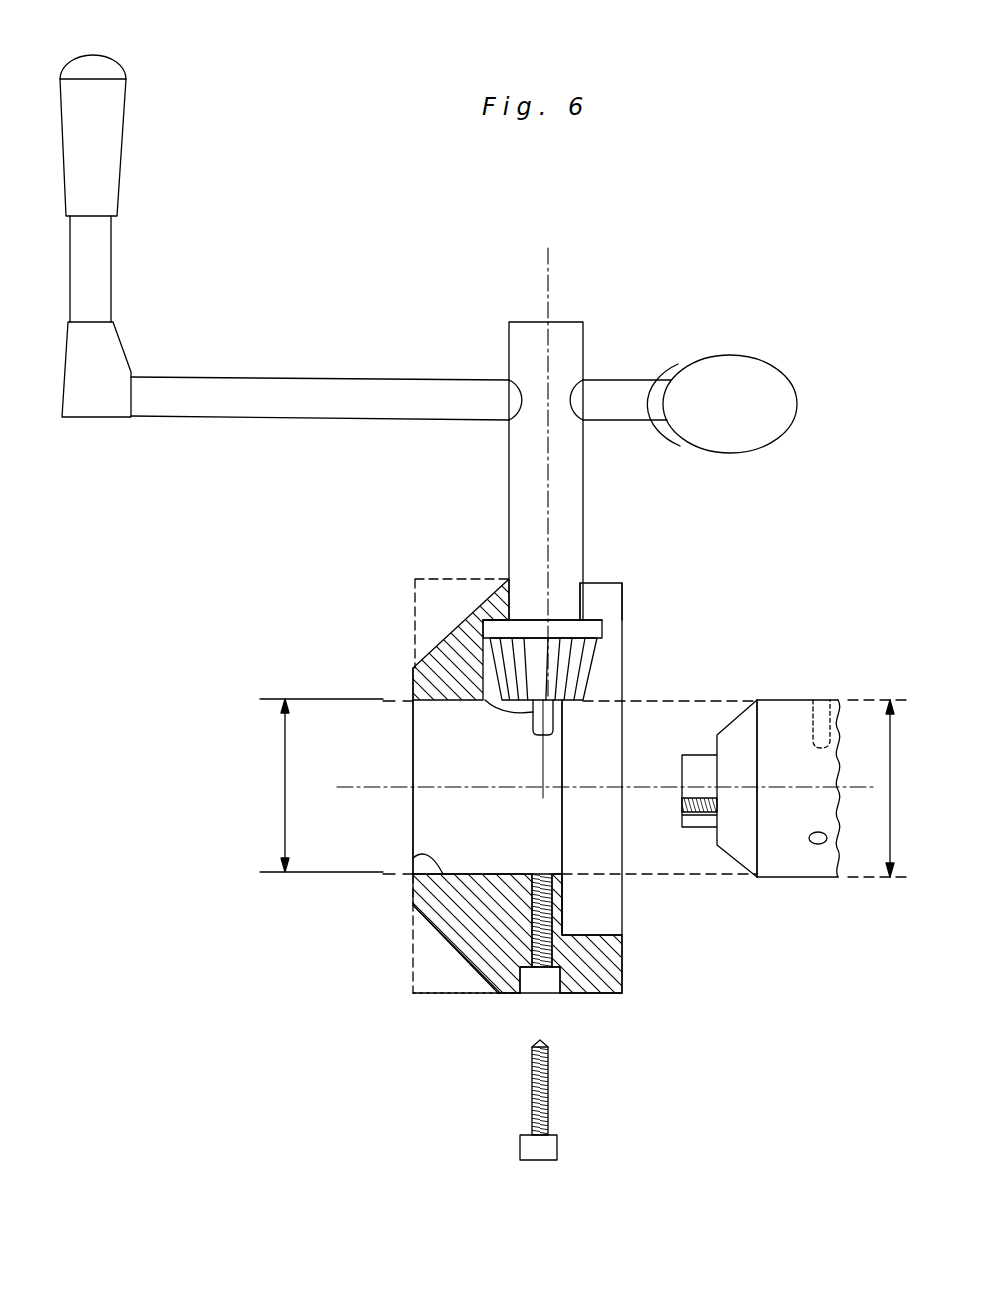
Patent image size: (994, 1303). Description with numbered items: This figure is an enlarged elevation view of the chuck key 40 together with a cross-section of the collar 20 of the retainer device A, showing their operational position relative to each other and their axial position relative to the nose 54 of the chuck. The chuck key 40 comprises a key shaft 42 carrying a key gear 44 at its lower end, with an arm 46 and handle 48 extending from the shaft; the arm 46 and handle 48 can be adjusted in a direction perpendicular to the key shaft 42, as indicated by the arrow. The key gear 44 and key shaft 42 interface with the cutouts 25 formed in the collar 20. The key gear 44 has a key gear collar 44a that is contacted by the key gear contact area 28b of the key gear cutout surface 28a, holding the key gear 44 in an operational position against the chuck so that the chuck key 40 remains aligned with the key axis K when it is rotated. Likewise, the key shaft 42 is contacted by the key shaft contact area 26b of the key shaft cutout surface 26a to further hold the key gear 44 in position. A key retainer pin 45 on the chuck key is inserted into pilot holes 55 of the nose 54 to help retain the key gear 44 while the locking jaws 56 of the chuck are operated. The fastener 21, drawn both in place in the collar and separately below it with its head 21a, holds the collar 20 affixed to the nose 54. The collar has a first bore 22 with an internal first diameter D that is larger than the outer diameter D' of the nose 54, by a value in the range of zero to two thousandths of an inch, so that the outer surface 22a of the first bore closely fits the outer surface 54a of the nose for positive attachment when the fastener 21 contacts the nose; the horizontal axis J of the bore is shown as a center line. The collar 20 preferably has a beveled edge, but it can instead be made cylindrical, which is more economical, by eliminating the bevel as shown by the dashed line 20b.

The collar 20 is at (423, 920).
The dashed line 20b is at (437, 992).
The fastener 21 is at (550, 1062).
The bolt head 21a is at (545, 967).
The first bore 22 is at (459, 819).
The outer surface of the first bore 22a is at (413, 857).
The cutouts 25 is at (608, 672).
The key shaft cutout surface 26a is at (614, 604).
The key shaft contact area 26b is at (508, 592).
The key gear cutout surface 28a is at (491, 691).
The key gear contact area 28b is at (507, 617).
The chuck key 40 is at (630, 340).
The key shaft 42 is at (582, 490).
The key gear 44 is at (602, 657).
The key gear collar 44a is at (603, 630).
The key retainer pin 45 is at (553, 725).
The arm 46 is at (294, 417).
The handle 48 is at (111, 270).
The nose 54 is at (773, 877).
The outer surface of the nose 54a is at (807, 777).
The pilot holes 55 is at (828, 707).
The locking jaws 56 is at (703, 828).
The retainer device A is at (413, 953).
The first diameter D is at (328, 786).
The outer diameter D' is at (879, 788).
The horizontal axis J is at (368, 785).
The key axis K is at (550, 267).